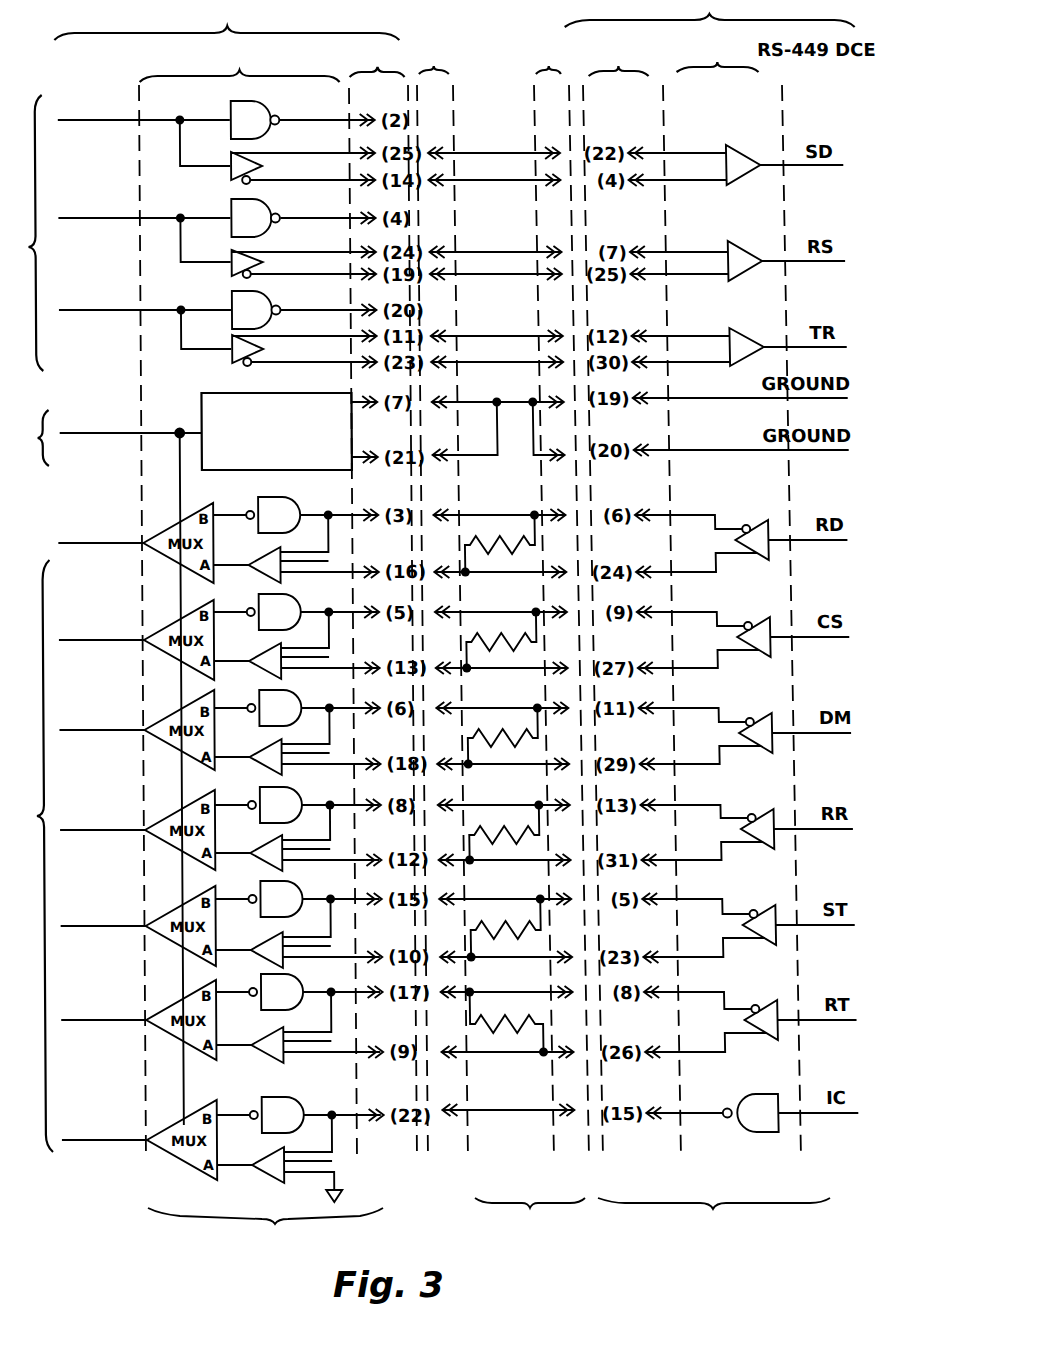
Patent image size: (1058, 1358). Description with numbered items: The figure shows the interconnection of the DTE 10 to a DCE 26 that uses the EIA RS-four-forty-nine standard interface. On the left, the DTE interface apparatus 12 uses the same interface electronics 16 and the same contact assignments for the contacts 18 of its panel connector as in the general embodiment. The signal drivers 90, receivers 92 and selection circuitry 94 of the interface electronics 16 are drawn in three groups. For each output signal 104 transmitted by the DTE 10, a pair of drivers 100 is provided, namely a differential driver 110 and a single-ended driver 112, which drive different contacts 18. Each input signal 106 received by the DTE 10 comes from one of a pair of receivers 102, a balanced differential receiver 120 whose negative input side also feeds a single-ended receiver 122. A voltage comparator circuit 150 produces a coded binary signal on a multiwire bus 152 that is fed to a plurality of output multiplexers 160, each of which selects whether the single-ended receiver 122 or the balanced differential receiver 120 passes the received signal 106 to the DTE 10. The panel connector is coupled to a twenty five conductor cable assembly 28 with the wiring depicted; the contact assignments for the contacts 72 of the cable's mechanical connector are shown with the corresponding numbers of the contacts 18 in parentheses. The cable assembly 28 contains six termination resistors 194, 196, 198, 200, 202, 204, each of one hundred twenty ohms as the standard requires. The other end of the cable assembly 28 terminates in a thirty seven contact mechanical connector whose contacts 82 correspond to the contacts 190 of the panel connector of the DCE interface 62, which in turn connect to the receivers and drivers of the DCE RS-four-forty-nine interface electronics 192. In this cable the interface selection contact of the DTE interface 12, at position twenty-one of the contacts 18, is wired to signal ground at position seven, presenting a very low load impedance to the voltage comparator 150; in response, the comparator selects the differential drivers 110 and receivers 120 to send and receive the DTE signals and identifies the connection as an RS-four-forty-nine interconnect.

The DTE 10 is at (226, 22).
The DTE interface apparatus 12 is at (265, 1227).
The interface electronics 16 is at (239, 64).
The contacts 18 is at (376, 60).
The DCE 26 is at (709, 13).
The twenty five conductor cable assembly 28 is at (530, 1212).
The DCE interface 62 is at (714, 1212).
The contacts 72 is at (433, 58).
The contacts 82 is at (548, 58).
The signal drivers 90 is at (24, 233).
The receivers 92 is at (29, 856).
The selection circuitry 94 is at (33, 438).
The pair of drivers 100 is at (212, 172).
The pair of receivers 102 is at (255, 504).
The output signal 104 is at (100, 92).
The input signal 106 is at (118, 518).
The differential driver 110 is at (263, 166).
The single-ended driver 112 is at (262, 101).
The balanced differential receiver 120 is at (330, 876).
The single-ended receiver 122 is at (280, 497).
The voltage comparator circuit 150 is at (248, 394).
The multiwire bus 152 is at (82, 449).
The output multiplexer 160 is at (214, 546).
The contacts 190 is at (618, 59).
The DCE RS-449 interface electronics 192 is at (717, 57).
The termination resistor 194 is at (499, 537).
The termination resistor 196 is at (499, 634).
The termination resistor 198 is at (499, 730).
The termination resistor 200 is at (499, 827).
The termination resistor 202 is at (499, 922).
The termination resistor 204 is at (499, 1016).